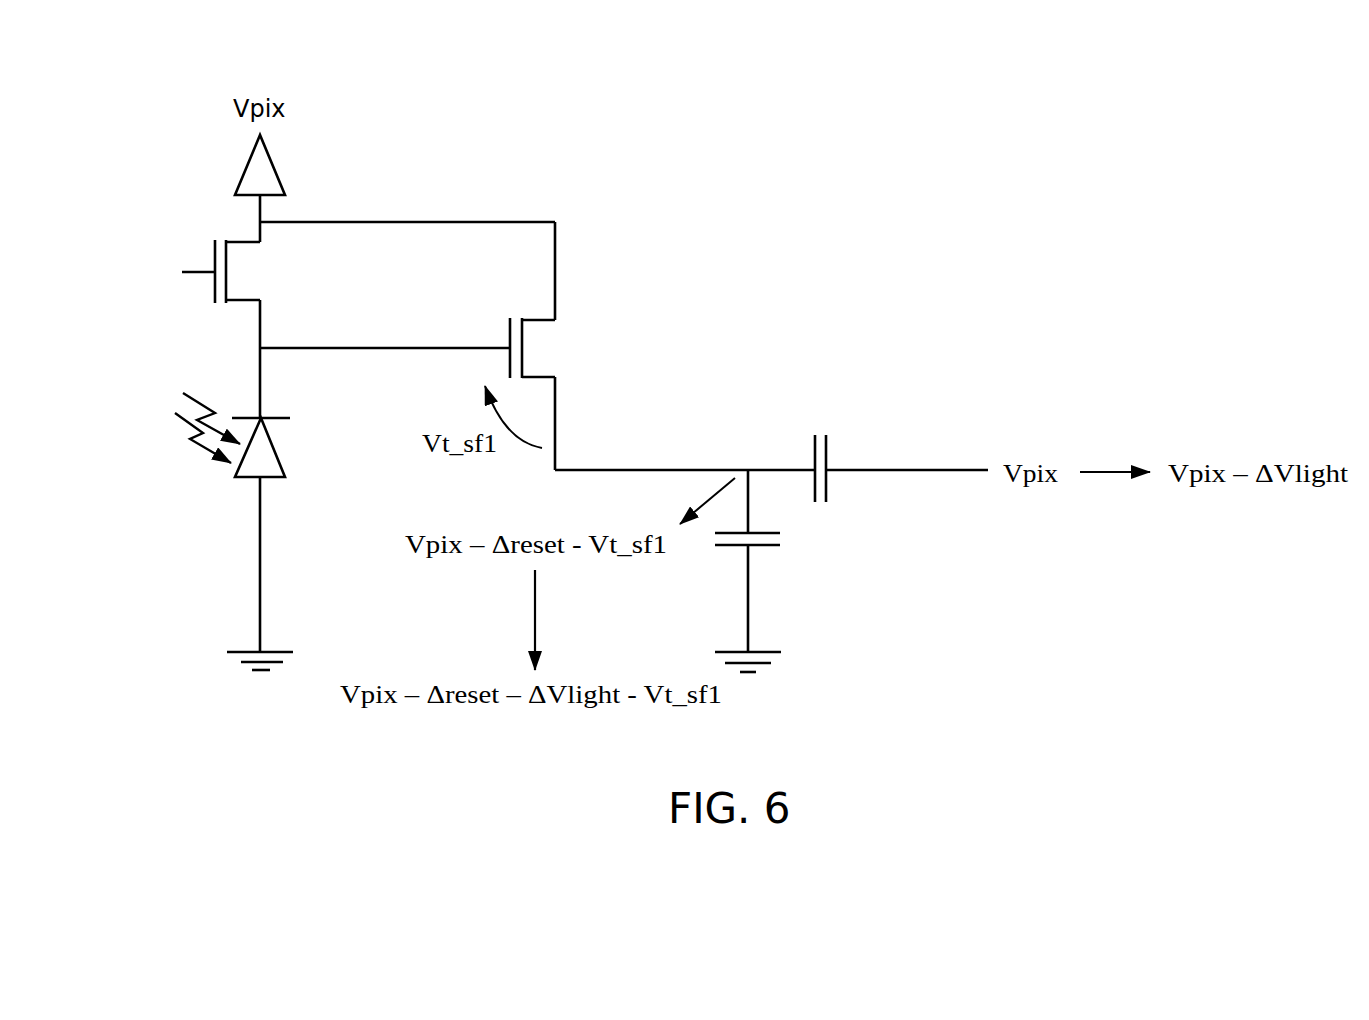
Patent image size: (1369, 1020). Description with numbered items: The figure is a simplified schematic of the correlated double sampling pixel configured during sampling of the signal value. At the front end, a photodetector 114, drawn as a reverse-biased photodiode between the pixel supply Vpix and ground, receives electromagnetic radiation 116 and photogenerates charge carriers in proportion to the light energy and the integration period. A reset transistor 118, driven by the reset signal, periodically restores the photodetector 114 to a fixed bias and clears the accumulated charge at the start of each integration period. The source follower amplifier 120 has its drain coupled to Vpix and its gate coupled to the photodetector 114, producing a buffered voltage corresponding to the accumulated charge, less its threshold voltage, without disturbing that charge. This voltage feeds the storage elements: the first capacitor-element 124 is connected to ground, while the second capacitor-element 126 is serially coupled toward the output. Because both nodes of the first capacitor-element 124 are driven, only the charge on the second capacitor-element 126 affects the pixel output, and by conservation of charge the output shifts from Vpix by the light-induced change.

The photodetector 114 is at (282, 456).
The electromagnetic radiation 116 is at (200, 434).
The reset transistor 118 is at (205, 249).
The source follower amplifier 120 is at (500, 341).
The capacitor-element C1 124 is at (781, 546).
The capacitor-element C2 126 is at (827, 455).